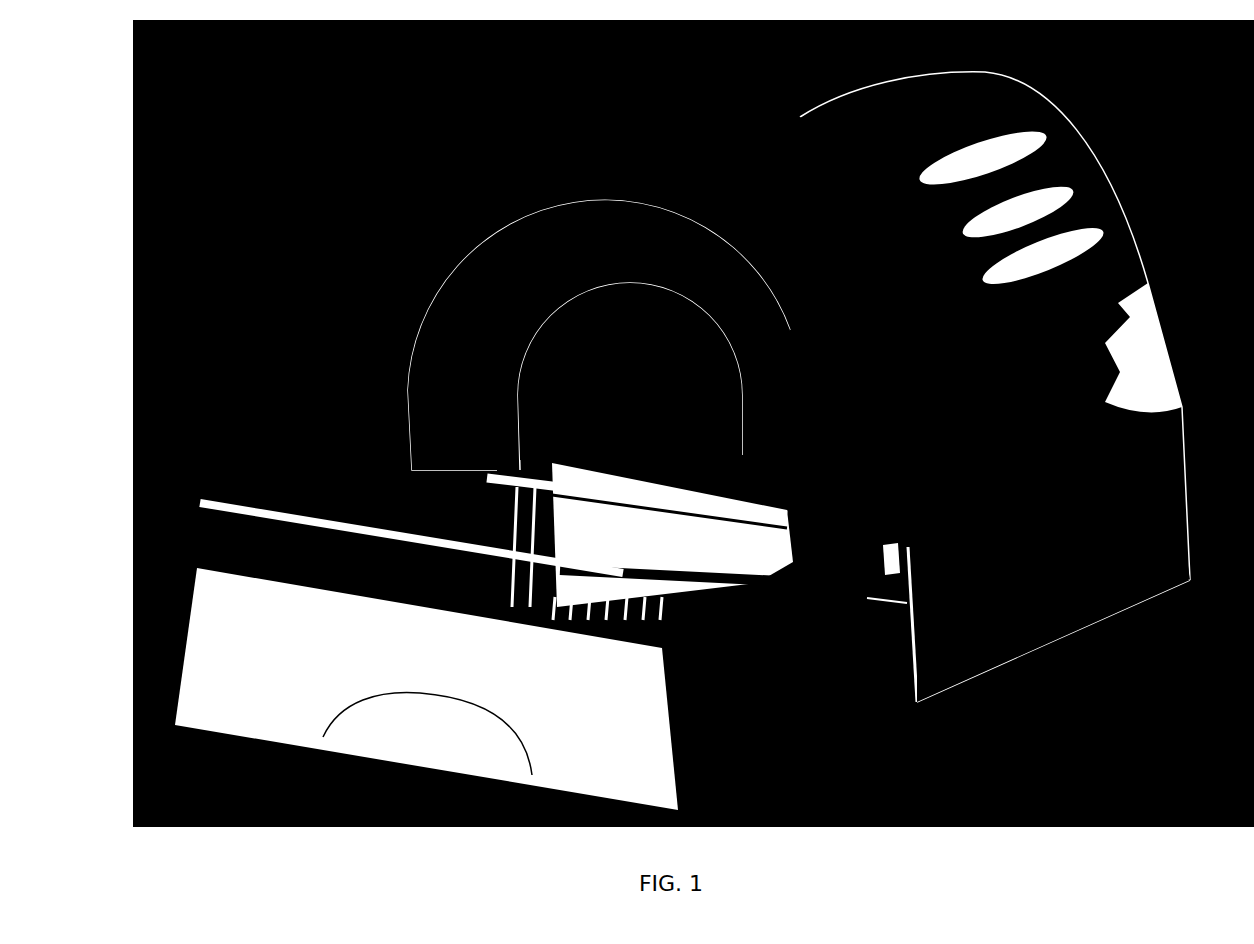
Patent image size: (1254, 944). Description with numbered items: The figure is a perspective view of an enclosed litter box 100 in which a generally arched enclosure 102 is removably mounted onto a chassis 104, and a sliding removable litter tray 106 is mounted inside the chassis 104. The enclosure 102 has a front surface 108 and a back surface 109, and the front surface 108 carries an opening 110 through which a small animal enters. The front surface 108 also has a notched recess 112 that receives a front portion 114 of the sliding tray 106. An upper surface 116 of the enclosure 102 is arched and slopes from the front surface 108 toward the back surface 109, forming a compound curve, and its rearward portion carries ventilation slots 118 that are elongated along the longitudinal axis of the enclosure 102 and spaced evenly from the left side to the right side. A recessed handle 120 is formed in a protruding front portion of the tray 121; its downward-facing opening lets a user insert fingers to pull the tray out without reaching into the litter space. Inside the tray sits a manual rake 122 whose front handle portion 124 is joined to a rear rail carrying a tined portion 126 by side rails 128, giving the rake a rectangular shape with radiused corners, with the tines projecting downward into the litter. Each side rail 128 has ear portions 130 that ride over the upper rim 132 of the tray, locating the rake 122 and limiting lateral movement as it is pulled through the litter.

The enclosed litter box 100 is at (486, 223).
The arched enclosure 102 is at (1133, 215).
The chassis 104 is at (878, 663).
The sliding removable litter tray 106 is at (737, 725).
The front surface 108 is at (508, 287).
The back surface 109 is at (1165, 395).
The opening 110 is at (622, 290).
The notched recess 112 is at (912, 585).
The front portion of the sliding tray 114 is at (703, 658).
The upper surface 116 is at (800, 115).
The ventilation slots 118 is at (940, 150).
The recessed handle 120 is at (392, 692).
The protruding front portion of the tray 121 is at (407, 659).
The manual rake 122 is at (326, 486).
The handle portion of the rake 124 is at (380, 565).
The tined portion 126 is at (538, 478).
The side rails 128 is at (260, 500).
The ear portions 130 is at (895, 545).
The upper rim 132 is at (838, 525).